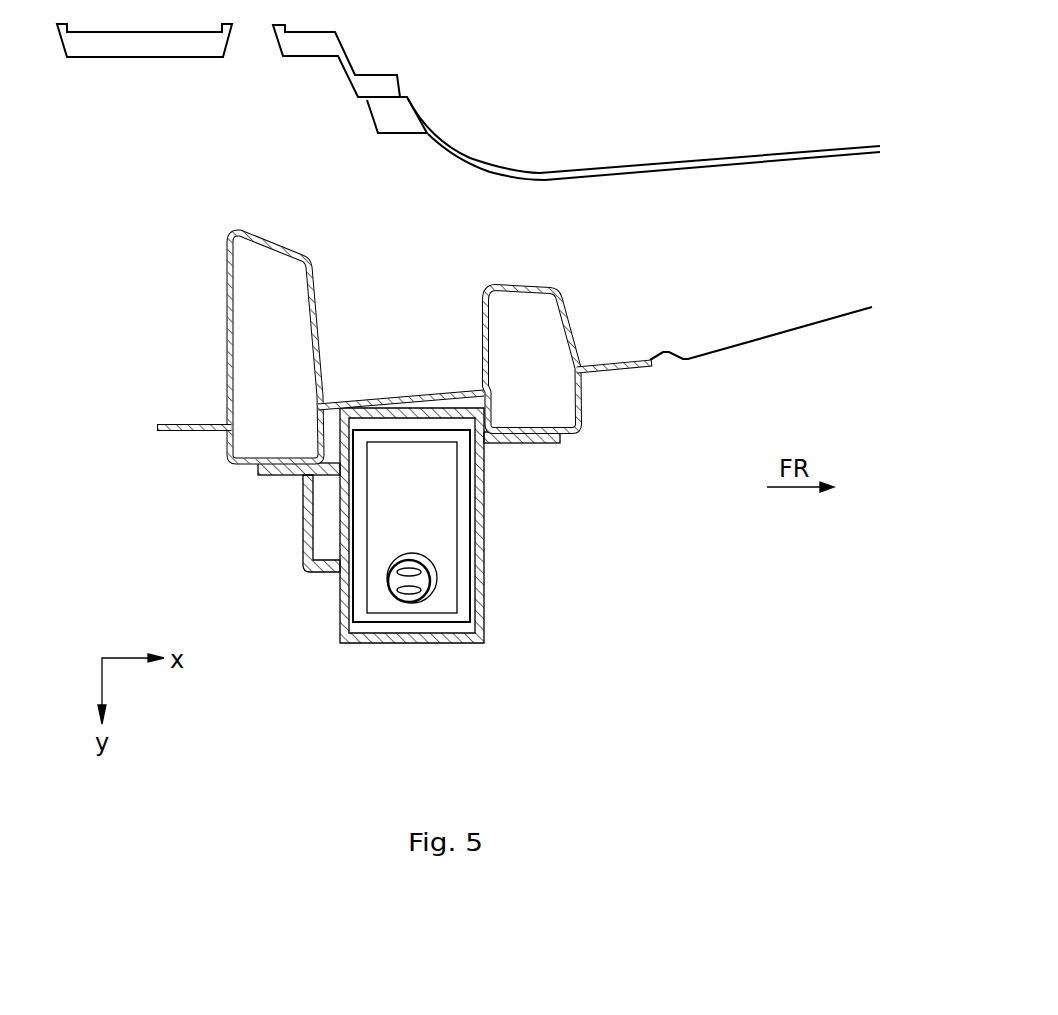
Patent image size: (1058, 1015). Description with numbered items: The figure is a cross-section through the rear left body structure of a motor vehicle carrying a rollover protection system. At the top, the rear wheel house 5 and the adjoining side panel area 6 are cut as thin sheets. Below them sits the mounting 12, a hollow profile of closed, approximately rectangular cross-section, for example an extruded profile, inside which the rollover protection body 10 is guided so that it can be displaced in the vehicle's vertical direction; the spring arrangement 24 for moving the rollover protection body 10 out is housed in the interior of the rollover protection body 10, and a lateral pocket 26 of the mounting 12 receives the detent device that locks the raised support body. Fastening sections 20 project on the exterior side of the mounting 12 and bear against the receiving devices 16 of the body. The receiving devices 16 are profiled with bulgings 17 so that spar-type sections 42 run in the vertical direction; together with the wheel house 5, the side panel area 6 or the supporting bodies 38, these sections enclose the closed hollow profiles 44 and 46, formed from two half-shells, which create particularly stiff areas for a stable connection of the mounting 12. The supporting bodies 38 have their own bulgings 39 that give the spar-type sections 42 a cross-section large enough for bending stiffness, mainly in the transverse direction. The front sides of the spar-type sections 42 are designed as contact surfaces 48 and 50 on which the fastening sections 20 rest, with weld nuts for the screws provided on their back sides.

The rear wheel house 5 is at (126, 50).
The side panel area 6 is at (730, 148).
The rollover protection body 10 is at (465, 557).
The mounting 12 is at (467, 638).
The receiving device 16 is at (170, 437).
The bulging 17 is at (276, 450).
The fastening section 20 is at (278, 472).
The spring arrangement 24 is at (430, 593).
The lateral pocket 26 is at (328, 538).
The supporting body 38 is at (225, 247).
The bulging 39 is at (265, 258).
The spar-type section 42 is at (247, 462).
The hollow profile 44 is at (284, 360).
The hollow profile 46 is at (539, 340).
The contact surface 48 is at (233, 476).
The contact surface 50 is at (585, 452).